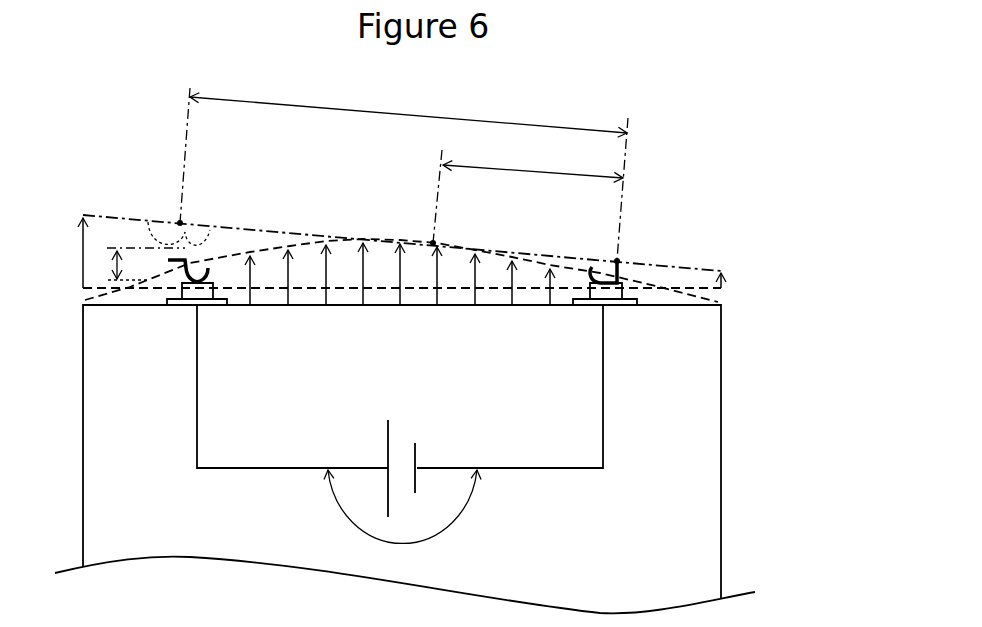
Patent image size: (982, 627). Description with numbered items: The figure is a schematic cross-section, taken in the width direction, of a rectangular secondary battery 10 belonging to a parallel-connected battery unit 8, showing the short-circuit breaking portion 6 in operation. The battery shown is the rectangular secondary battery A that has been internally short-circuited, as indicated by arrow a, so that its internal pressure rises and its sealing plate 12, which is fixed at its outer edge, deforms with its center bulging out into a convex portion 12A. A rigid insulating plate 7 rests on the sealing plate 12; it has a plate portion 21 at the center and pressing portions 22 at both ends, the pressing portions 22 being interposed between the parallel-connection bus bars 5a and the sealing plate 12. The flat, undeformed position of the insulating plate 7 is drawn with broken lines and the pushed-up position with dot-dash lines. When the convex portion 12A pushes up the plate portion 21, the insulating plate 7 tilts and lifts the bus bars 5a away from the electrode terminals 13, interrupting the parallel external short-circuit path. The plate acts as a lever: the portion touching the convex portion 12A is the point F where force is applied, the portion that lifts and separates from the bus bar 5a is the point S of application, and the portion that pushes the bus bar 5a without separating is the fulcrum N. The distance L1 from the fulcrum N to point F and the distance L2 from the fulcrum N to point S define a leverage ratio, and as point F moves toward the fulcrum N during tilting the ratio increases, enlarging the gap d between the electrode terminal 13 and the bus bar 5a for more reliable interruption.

The parallel-connection bus bar 5a is at (175, 264).
The short-circuit breaking portion 6 is at (170, 203).
The insulating plate 7 is at (95, 212).
The parallel-connected battery unit 8 is at (741, 384).
The rectangular secondary battery 10 is at (722, 508).
The sealing plate 12 is at (272, 248).
The convex portion 12A is at (326, 234).
The electrode terminal 13 is at (192, 306).
The plate portion 21 is at (341, 234).
The pressing portion 22 is at (163, 231).
The point of application S is at (181, 221).
The point where force is applied F is at (432, 241).
The fulcrum N is at (616, 259).
The gap d is at (106, 265).
The distance from fulcrum to point where force is applied L1 is at (528, 193).
The distance from fulcrum to point of application L2 is at (404, 174).
The arrow indicating internal short-circuit a is at (402, 516).
The rectangular secondary battery A is at (614, 549).